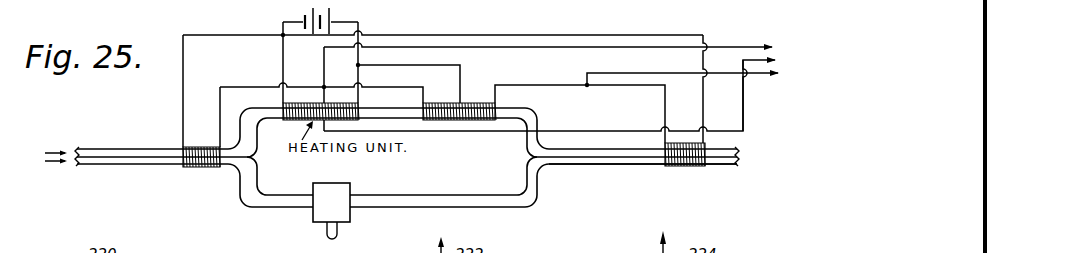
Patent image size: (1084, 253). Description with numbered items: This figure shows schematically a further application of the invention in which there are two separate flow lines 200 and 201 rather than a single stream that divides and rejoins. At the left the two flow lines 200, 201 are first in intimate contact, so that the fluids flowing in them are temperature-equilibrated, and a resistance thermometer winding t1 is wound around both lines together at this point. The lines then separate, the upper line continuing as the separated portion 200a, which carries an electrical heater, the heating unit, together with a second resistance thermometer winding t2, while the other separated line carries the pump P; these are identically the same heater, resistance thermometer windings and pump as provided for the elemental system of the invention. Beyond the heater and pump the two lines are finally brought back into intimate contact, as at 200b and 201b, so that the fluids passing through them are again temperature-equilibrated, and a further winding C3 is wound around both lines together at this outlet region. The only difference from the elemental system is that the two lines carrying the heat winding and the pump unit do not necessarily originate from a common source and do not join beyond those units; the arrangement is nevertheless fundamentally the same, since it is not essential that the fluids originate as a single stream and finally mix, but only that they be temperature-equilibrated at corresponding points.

The flow line 200 is at (117, 152).
The flow line 201 is at (132, 162).
The separated portion of flow line 200a is at (255, 118).
The rejoined portion of flow line 200b is at (285, 201).
The rejoined portion of flow line 201b is at (599, 166).
The resistance thermometer winding t1 is at (198, 147).
The resistance thermometer winding t2 is at (463, 104).
The outlet coil C3 is at (682, 168).
The pump P is at (331, 211).